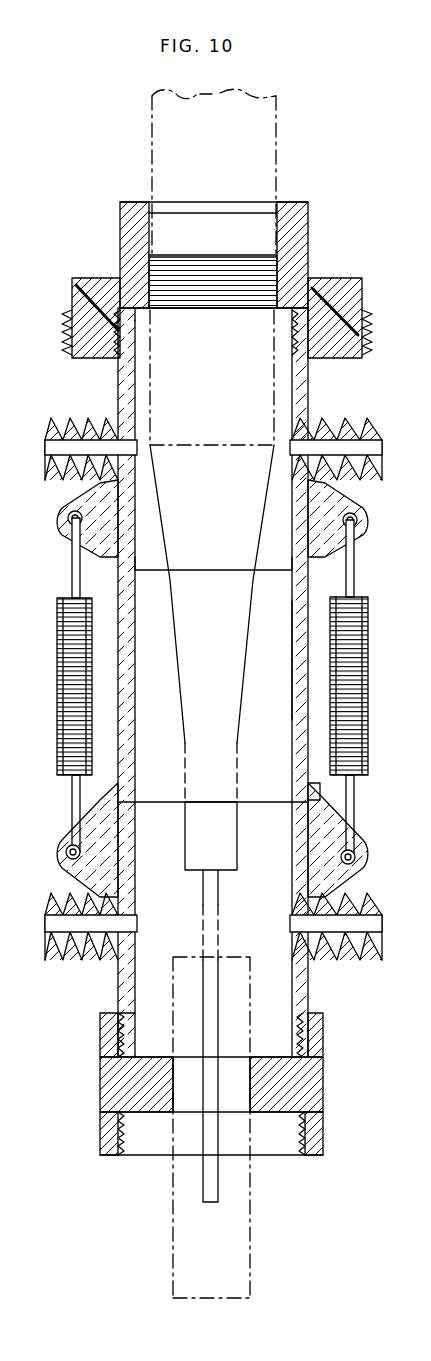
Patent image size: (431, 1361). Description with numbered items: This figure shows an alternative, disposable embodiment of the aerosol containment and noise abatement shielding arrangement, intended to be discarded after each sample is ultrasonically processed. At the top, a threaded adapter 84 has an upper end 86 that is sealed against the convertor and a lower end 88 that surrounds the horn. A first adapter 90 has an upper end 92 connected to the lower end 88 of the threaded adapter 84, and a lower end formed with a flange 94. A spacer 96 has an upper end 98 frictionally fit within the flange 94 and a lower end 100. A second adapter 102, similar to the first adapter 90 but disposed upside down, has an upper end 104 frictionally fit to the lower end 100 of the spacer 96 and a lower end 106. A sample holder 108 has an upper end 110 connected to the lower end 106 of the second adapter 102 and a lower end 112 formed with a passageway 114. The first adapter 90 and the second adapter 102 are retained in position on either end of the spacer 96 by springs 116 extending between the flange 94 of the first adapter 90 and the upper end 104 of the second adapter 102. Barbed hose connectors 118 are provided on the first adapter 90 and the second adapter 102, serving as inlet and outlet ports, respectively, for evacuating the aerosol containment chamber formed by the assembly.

The threaded adapter 84 is at (93, 290).
The upper end 86 is at (307, 233).
The lower end 88 is at (362, 347).
The first adapter 90 is at (305, 403).
The upper end 92 is at (135, 340).
The flange 94 is at (313, 573).
The spacer 96 is at (300, 653).
The upper end 98 is at (293, 588).
The lower end 100 is at (303, 768).
The second adapter 102 is at (300, 870).
The upper end 104 is at (297, 808).
The lower end 106 is at (120, 1022).
The sample holder 108 is at (303, 1085).
The upper end 110 is at (317, 1027).
The lower end 112 is at (313, 1137).
The passageway 114 is at (245, 1088).
The springs 116 is at (60, 670).
The barbed hose connectors 118 is at (372, 428).